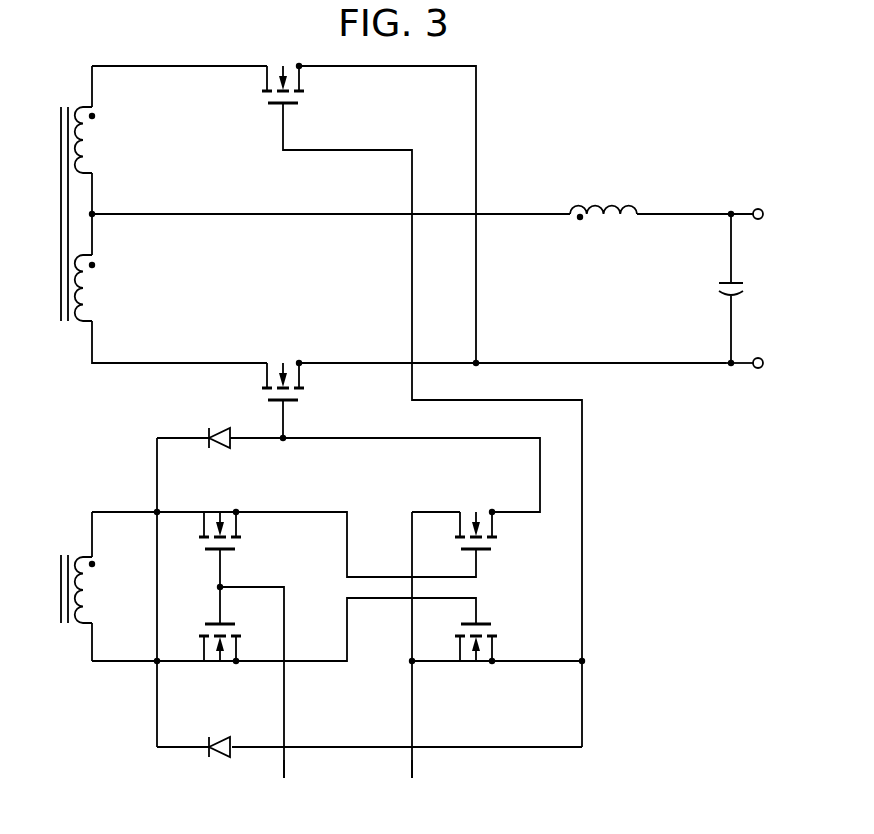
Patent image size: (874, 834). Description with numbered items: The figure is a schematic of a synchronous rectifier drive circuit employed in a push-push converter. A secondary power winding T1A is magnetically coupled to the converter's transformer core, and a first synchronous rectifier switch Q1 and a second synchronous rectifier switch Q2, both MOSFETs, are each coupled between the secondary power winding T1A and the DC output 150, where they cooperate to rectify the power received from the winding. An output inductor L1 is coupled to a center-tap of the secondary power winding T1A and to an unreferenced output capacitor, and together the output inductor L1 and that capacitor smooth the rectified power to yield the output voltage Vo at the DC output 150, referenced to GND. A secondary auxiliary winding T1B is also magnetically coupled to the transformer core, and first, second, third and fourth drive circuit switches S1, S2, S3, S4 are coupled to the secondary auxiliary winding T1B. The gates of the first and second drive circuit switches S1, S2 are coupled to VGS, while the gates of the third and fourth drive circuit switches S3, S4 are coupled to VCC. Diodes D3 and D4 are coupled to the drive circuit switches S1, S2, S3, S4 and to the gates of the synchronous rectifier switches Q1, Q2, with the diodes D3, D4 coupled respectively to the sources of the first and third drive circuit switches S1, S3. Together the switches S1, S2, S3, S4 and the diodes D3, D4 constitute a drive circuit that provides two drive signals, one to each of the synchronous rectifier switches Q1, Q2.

The DC output 150 is at (633, 108).
The secondary power winding T1A is at (56, 214).
The secondary auxiliary winding T1B is at (56, 589).
The output inductor L1 is at (603, 221).
The output voltage Vo is at (745, 290).
The ground GND is at (768, 363).
The second synchronous rectifier switch Q2 is at (283, 72).
The first synchronous rectifier switch Q1 is at (283, 369).
The first drive circuit switch S1 is at (220, 519).
The second drive circuit switch S2 is at (220, 657).
The third drive circuit switch S3 is at (476, 518).
The fourth drive circuit switch S4 is at (476, 657).
The diode D3 is at (219, 425).
The diode D4 is at (219, 761).
The gate drive voltage VGS is at (283, 782).
The supply voltage VCC is at (411, 782).